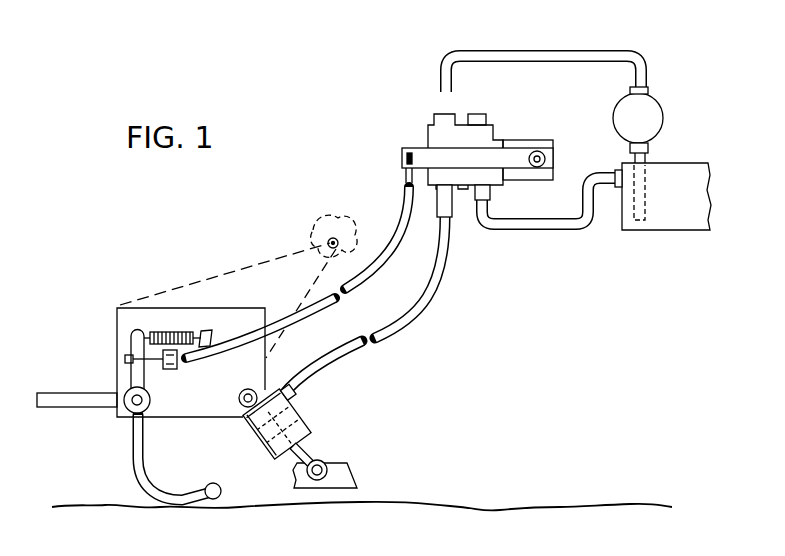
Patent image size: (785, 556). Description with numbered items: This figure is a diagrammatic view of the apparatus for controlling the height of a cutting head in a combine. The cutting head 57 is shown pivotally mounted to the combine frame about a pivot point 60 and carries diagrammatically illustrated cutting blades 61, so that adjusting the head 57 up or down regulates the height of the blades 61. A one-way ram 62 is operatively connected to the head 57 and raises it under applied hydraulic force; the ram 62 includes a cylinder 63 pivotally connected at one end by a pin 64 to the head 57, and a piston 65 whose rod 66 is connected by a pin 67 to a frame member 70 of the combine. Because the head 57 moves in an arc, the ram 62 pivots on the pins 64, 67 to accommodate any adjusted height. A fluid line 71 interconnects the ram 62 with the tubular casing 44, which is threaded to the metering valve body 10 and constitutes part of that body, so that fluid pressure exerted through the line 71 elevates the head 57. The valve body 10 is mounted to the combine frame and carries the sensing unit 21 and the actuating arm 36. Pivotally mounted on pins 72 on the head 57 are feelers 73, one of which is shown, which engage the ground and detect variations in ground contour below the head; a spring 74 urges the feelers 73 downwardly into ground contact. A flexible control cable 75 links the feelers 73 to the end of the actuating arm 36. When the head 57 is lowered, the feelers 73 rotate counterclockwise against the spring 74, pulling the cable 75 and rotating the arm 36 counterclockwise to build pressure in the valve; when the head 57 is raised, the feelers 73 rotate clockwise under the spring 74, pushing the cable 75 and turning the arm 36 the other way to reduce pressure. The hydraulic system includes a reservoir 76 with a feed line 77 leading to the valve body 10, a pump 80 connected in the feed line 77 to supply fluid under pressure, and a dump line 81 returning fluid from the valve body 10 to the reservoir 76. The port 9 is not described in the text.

The inlet port 9 is at (485, 110).
The valve body 10 is at (428, 125).
The sensing unit 21 is at (531, 136).
The actuating arm 36 is at (402, 158).
The tubular casing 44 is at (453, 210).
The cutting head 57 is at (117, 322).
The pivot point 60 is at (328, 249).
The cutting blades 61 is at (58, 393).
The one-way ram 62 is at (292, 409).
The cylinder 63 is at (280, 458).
The pin 64 is at (238, 398).
The piston 65 is at (250, 428).
The rod 66 is at (305, 455).
The pin 67 is at (317, 481).
The frame member 70 is at (350, 475).
The fluid line 71 is at (427, 305).
The pins 72 is at (127, 413).
The feelers 73 is at (175, 497).
The spring 74 is at (175, 332).
The flexible control cable 75 is at (378, 262).
The reservoir 76 is at (687, 167).
The feed line 77 is at (563, 50).
The pump 80 is at (662, 106).
The dump line 81 is at (543, 231).